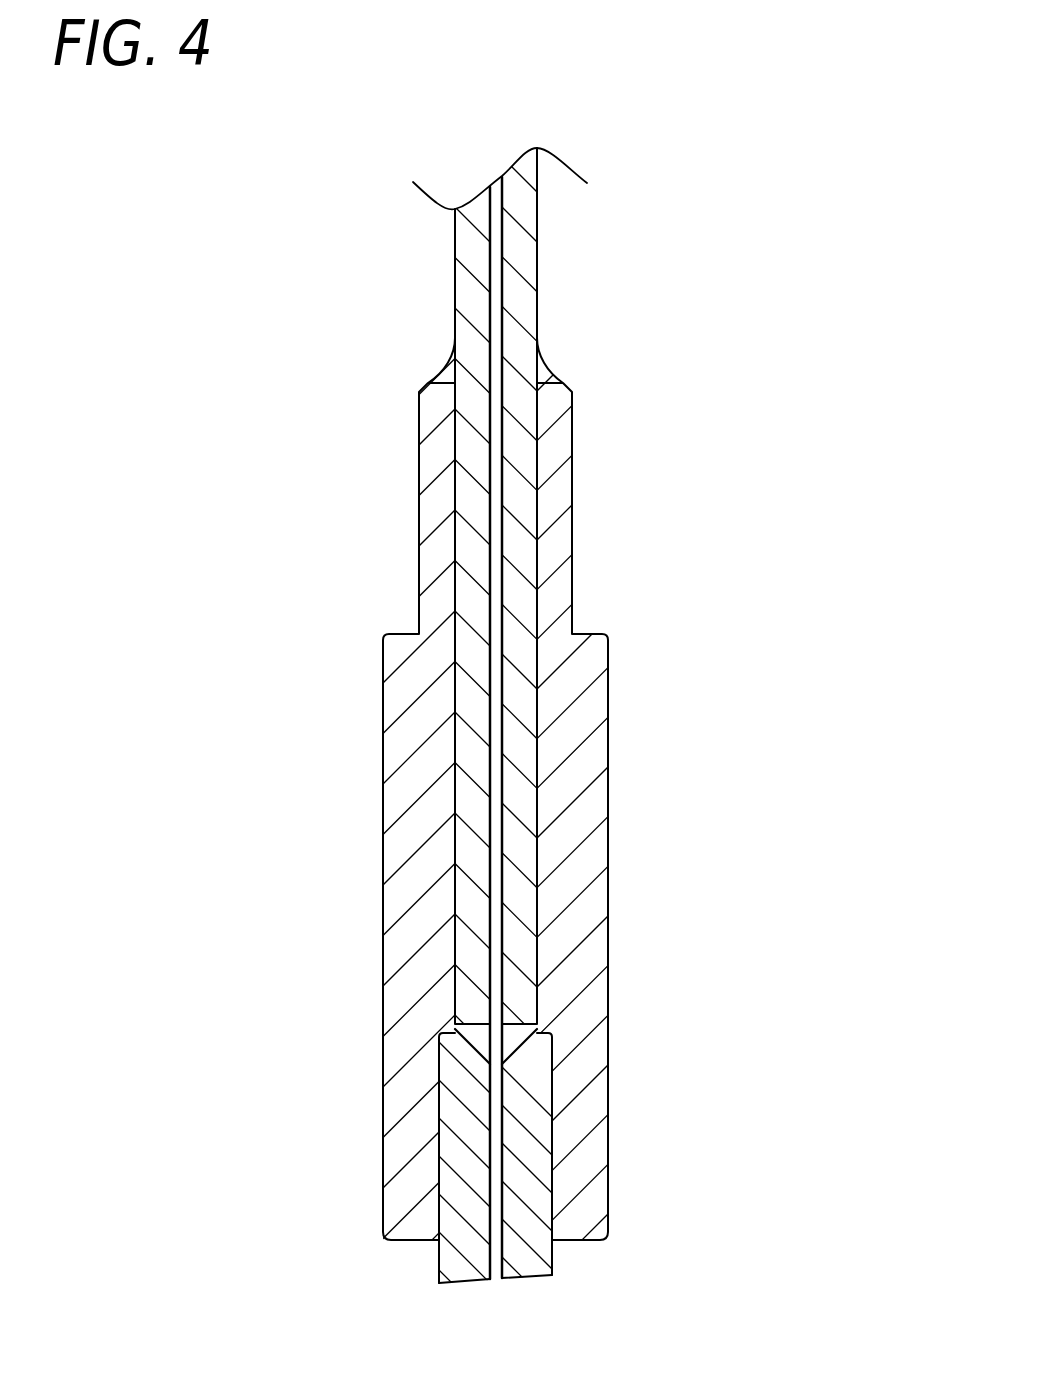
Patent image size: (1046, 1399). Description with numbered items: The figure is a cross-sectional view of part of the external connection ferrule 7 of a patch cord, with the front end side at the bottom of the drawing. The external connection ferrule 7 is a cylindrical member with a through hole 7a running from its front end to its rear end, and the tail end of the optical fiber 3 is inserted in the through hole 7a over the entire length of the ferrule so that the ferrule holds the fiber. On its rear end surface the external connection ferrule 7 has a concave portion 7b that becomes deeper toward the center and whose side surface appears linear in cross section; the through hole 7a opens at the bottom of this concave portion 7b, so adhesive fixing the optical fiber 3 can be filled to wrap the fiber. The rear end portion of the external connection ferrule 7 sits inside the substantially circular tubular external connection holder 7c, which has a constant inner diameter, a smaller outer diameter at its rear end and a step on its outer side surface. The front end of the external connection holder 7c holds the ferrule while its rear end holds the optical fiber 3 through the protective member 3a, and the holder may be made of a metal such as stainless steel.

The optical fiber 3 is at (497, 815).
The protective member 3a is at (473, 921).
The external connection ferrule 7 is at (538, 1114).
The through hole 7a is at (487, 1117).
The concave portion 7b is at (522, 1045).
The external connection holder 7c is at (567, 913).